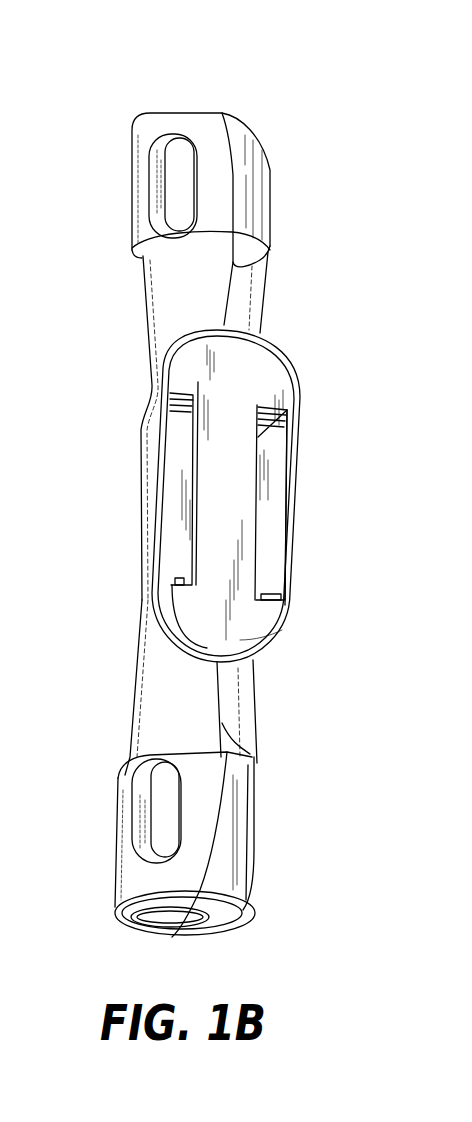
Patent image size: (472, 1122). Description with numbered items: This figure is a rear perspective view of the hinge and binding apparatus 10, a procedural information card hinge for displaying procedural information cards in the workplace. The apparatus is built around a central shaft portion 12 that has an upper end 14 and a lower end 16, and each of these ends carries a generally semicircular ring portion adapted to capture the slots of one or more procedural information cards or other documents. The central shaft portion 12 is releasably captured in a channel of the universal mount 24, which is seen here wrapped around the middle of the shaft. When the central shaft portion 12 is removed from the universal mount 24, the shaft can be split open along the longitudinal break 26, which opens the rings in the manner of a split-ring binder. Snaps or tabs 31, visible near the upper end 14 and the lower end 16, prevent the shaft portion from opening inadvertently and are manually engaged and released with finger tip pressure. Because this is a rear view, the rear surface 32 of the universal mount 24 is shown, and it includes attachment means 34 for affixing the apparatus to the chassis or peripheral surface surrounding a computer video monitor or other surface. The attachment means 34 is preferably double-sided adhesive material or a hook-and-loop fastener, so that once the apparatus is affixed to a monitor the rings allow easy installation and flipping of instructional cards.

The hinge and binding apparatus 10 is at (191, 523).
The central shaft portion 12 is at (268, 290).
The upper end 14 is at (178, 110).
The lower end 16 is at (150, 937).
The universal mount 24 is at (300, 472).
The longitudinal break 26 is at (222, 690).
The snaps or tabs 31 is at (157, 168).
The rear surface 32 is at (263, 623).
The attachment means 34 is at (177, 605).